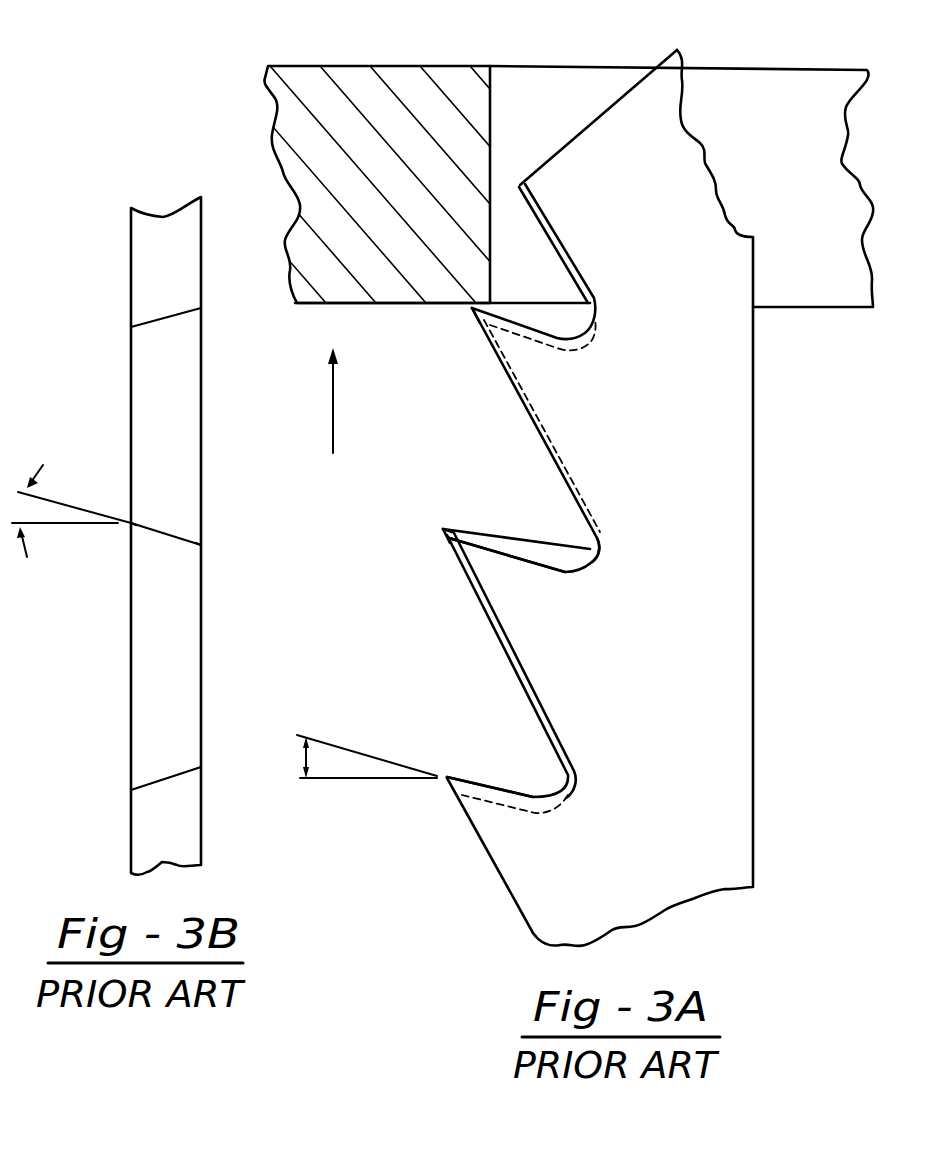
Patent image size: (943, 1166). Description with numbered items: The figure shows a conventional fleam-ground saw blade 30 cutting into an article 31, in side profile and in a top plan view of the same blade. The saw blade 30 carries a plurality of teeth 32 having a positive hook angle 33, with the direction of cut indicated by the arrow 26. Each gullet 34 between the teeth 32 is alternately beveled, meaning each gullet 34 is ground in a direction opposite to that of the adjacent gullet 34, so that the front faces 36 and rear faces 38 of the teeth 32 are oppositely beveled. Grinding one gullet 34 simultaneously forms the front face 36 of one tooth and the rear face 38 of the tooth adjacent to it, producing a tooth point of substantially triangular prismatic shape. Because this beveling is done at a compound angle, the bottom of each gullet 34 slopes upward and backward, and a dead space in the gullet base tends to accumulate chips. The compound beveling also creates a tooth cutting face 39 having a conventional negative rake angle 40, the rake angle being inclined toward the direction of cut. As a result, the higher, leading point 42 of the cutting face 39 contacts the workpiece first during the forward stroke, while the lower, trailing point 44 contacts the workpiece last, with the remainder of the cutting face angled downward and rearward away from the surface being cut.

In FIG. 3A, the arrow 26 is at (333, 412).
In FIG. 3A, the saw blade 30 is at (740, 648).
In FIG. 3A, the article 31 is at (393, 75).
In FIG. 3A, the teeth 32 is at (523, 355).
In FIG. 3A, the positive hook angle 33 is at (306, 745).
In FIG. 3A, the gullet 34 is at (598, 545).
In FIG. 3A, the front face 36 is at (493, 548).
In FIG. 3A, the rear face 38 is at (530, 413).
In FIG. 3A, the tooth cutting face 39 is at (445, 534).
In FIG. 3B, the tooth cutting face 39 is at (168, 535).
In FIG. 3B, the negative rake angle 40 is at (23, 507).
In FIG. 3A, the leading point 42 is at (472, 308).
In FIG. 3B, the leading point 42 is at (131, 524).
In FIG. 3A, the trailing point 44 is at (450, 540).
In FIG. 3B, the trailing point 44 is at (201, 545).